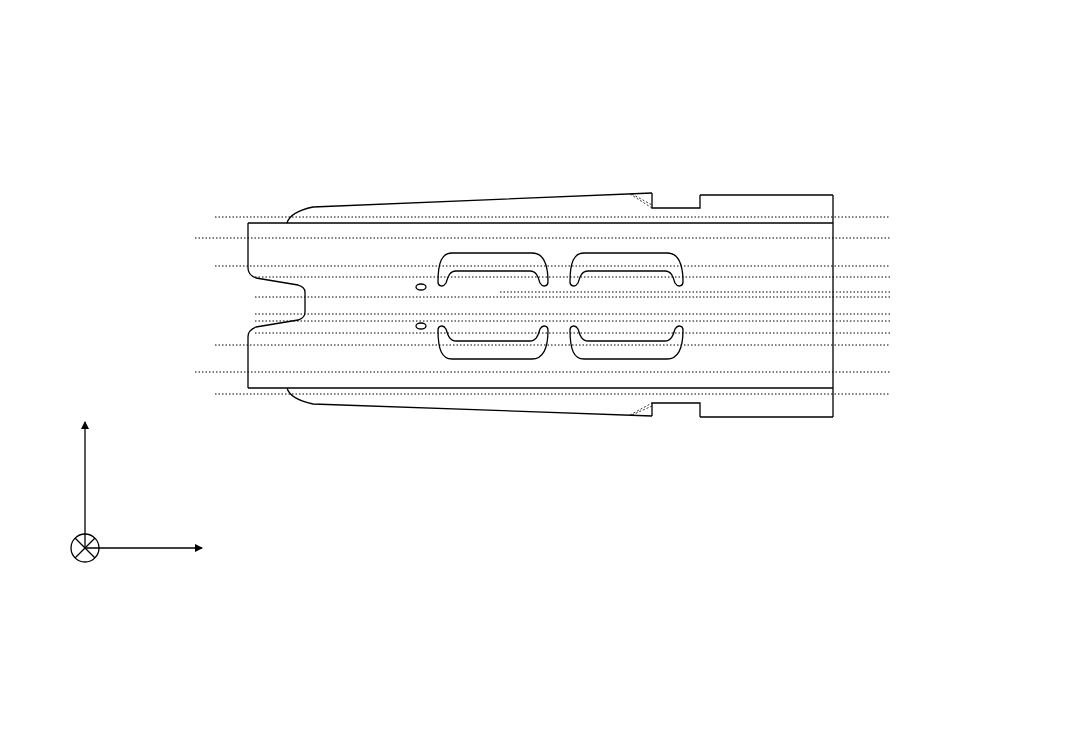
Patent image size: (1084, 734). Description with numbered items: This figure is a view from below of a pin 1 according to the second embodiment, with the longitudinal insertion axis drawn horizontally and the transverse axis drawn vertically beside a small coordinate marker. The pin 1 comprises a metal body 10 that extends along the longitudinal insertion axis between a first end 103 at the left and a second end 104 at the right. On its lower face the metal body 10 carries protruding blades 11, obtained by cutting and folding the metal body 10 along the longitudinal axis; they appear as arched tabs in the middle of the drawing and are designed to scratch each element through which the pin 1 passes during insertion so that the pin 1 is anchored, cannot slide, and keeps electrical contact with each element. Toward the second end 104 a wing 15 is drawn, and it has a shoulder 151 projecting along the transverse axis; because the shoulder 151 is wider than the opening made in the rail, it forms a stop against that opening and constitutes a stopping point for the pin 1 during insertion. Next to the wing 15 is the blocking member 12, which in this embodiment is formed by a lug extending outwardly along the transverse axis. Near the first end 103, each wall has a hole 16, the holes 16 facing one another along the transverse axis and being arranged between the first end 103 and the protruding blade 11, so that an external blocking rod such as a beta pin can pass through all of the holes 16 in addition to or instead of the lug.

The pin 1 is at (270, 125).
The metal body 10 is at (427, 208).
The protruding blade 11 is at (490, 268).
The blocking member 12 is at (652, 192).
The wing 15 is at (768, 195).
The shoulder 151 is at (702, 195).
The hole 16 is at (413, 288).
The first end 103 is at (245, 265).
The second end 104 is at (838, 295).